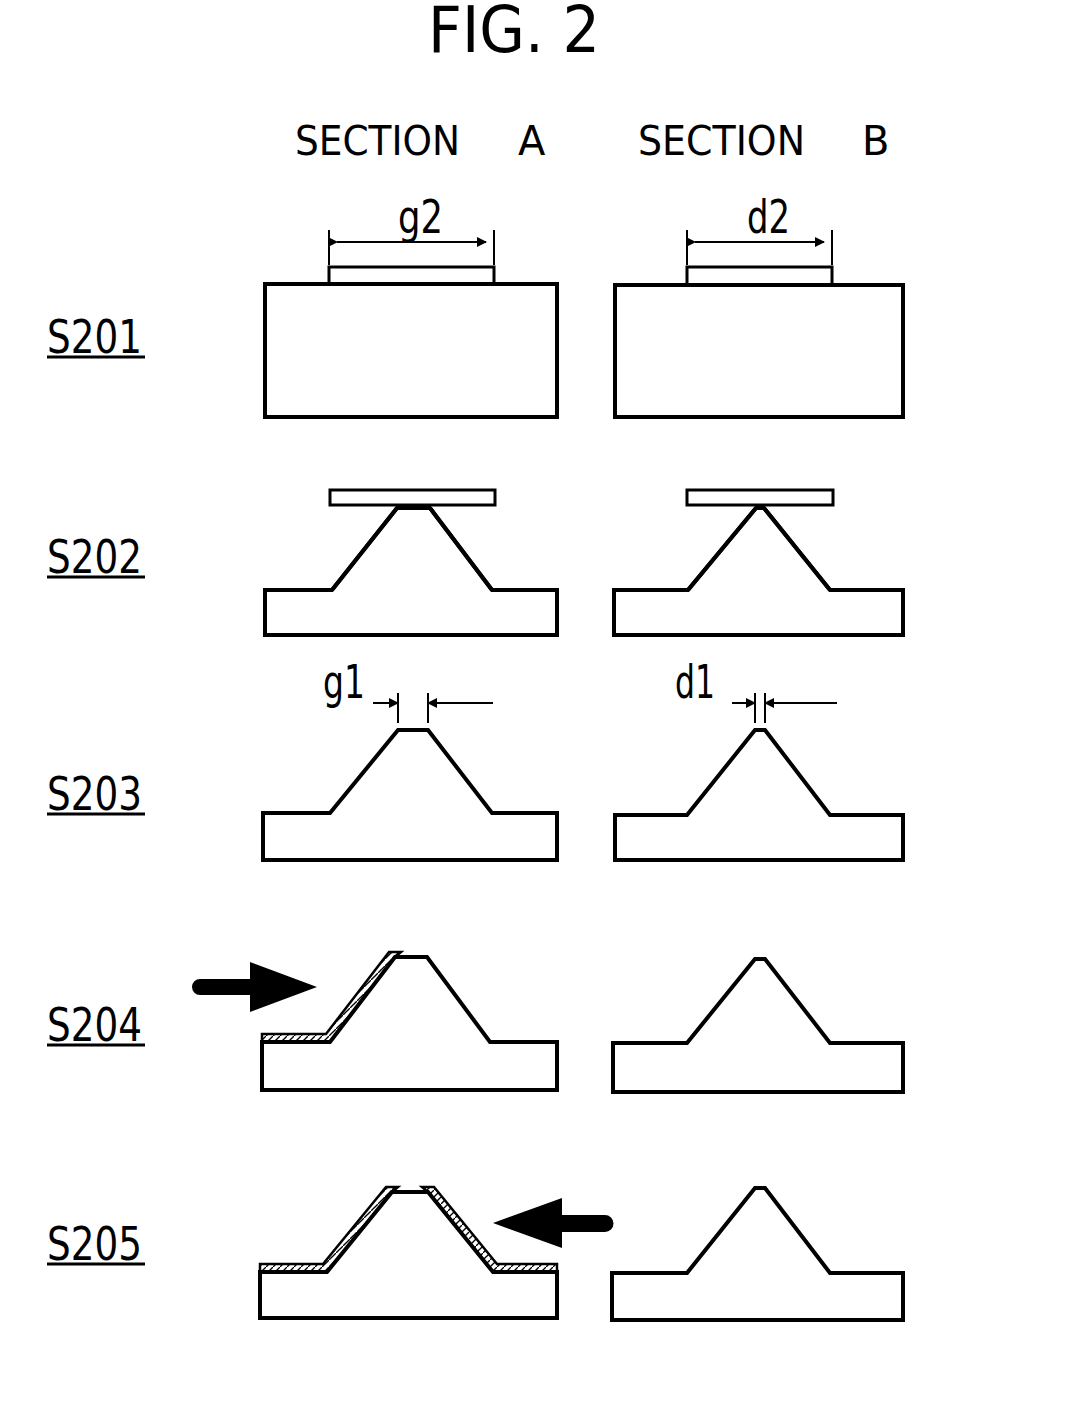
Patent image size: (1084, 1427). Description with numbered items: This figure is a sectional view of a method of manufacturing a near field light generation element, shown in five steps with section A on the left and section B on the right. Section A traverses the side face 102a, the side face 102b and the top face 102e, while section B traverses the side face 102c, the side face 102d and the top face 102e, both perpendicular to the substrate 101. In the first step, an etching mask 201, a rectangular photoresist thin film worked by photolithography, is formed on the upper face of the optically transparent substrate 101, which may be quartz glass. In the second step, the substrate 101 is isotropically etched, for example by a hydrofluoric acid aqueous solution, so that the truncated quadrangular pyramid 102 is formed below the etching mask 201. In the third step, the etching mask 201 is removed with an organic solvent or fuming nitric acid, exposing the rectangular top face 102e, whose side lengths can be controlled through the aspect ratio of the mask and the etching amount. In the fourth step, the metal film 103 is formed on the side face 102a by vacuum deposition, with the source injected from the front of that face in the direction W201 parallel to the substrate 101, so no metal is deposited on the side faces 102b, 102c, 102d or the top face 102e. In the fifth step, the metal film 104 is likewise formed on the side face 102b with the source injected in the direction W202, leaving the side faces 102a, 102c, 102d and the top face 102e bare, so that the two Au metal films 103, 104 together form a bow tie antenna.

The substrate 101 is at (293, 312).
The etching mask 201 is at (373, 277).
The truncated quadrangular pyramid 102 is at (397, 568).
The side face 102a is at (348, 562).
The side face 102b is at (467, 550).
The side face 102c is at (713, 555).
The side face 102d is at (813, 560).
The top face 102e is at (413, 730).
The metal film 103 is at (363, 978).
The metal film 104 is at (450, 1202).
The direction W201 is at (231, 969).
The direction W202 is at (579, 1207).